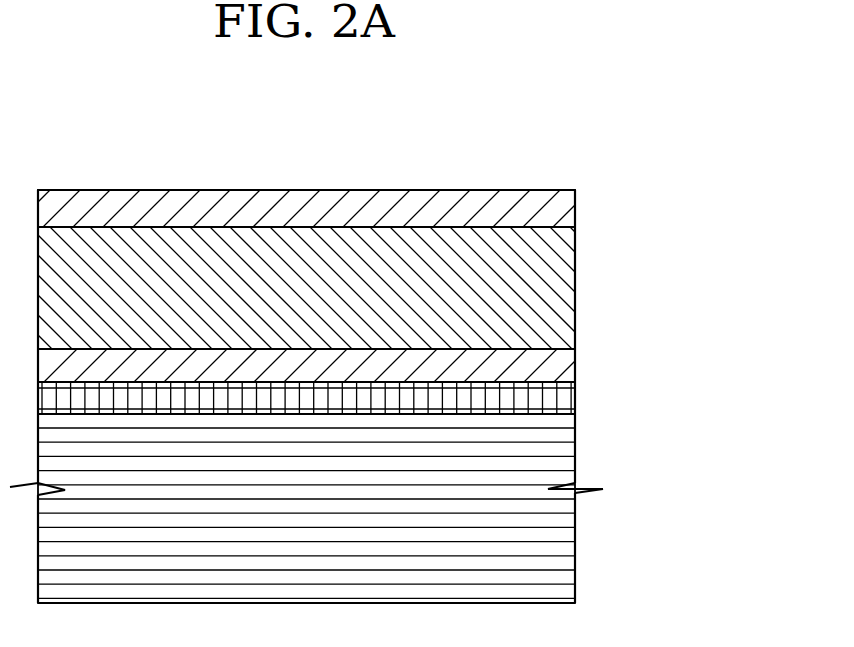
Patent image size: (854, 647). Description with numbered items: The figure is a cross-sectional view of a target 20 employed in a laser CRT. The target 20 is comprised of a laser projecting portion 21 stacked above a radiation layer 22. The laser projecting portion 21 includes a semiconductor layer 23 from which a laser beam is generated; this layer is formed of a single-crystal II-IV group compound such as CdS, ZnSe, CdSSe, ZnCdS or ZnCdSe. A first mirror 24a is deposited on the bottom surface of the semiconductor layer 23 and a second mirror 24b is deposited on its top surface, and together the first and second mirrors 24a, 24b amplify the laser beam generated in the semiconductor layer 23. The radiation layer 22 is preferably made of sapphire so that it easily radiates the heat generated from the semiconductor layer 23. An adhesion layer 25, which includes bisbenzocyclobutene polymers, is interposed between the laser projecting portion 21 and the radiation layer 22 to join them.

The target 20 is at (502, 145).
The laser projecting portion 21 is at (703, 212).
The radiation layer 22 is at (565, 522).
The semiconductor layer 23 is at (565, 288).
The first mirror 24a is at (565, 368).
The second mirror 24b is at (565, 213).
The adhesion layer 25 is at (565, 399).